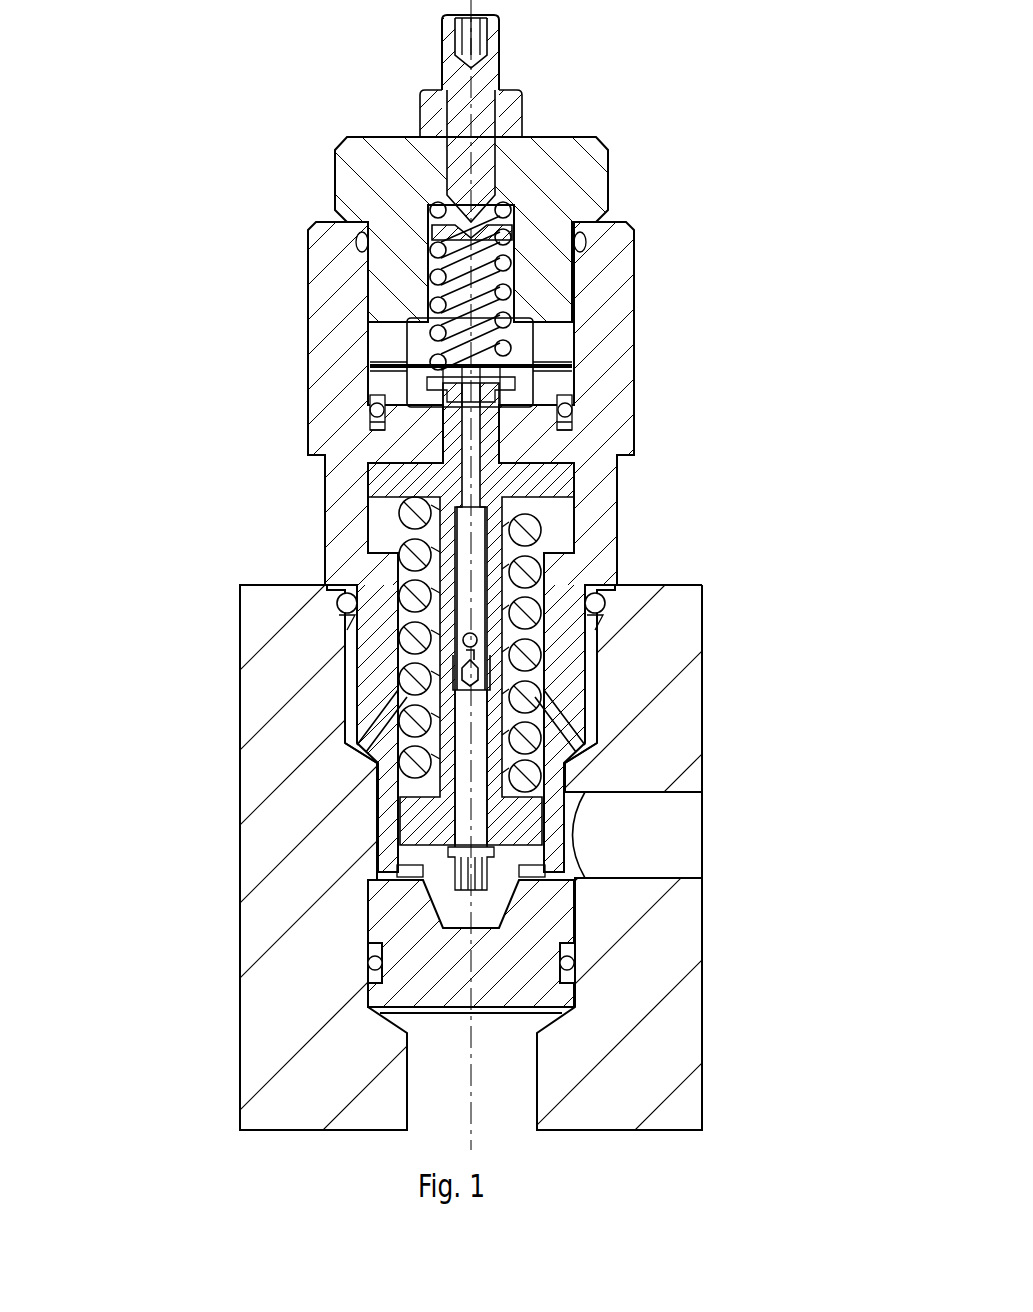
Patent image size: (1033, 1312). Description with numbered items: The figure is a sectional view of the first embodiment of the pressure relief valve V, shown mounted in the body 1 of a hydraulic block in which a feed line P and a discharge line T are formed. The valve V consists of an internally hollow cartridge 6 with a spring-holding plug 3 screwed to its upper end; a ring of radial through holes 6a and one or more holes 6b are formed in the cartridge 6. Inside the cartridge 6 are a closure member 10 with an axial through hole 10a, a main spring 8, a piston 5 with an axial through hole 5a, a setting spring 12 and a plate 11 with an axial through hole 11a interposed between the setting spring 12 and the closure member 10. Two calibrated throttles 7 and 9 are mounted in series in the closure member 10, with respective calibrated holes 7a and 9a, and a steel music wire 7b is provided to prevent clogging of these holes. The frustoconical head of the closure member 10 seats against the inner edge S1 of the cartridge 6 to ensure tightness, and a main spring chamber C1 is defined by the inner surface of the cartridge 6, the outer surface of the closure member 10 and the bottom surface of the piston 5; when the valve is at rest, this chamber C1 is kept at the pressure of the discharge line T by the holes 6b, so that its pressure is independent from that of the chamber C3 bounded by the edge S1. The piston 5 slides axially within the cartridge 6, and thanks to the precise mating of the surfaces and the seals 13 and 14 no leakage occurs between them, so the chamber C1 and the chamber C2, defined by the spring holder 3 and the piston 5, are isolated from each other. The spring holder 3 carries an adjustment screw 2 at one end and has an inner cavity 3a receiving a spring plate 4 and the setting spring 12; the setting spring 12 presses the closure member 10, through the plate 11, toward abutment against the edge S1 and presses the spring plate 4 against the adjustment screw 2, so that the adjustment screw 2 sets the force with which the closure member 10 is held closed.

The body 1 is at (605, 1082).
The adjustment screw 2 is at (445, 45).
The spring-holding plug 3 is at (345, 155).
The inner cavity 3a is at (512, 250).
The spring plate 4 is at (478, 215).
The piston 5 is at (385, 487).
The axial through hole 5a is at (443, 470).
The cartridge 6 is at (308, 270).
The radial through holes 6a is at (375, 850).
The holes 6b is at (350, 758).
The calibrated throttle 7 is at (420, 668).
The calibrated hole 7a is at (486, 662).
The steel music wire 7b is at (482, 648).
The main spring 8 is at (405, 704).
The calibrated throttle 9 is at (548, 908).
The calibrated hole 9a is at (548, 863).
The closure member 10 is at (517, 813).
The axial through hole 10a is at (463, 598).
The plate 11 is at (542, 372).
The axial through hole 11a is at (530, 357).
The setting spring 12 is at (528, 302).
The seal 13 is at (568, 432).
The seal 14 is at (570, 410).
The main spring chamber C1 is at (385, 537).
The chamber C2 is at (398, 388).
The chamber C3 is at (415, 870).
The inner edge S1 is at (425, 878).
The valve V is at (688, 70).